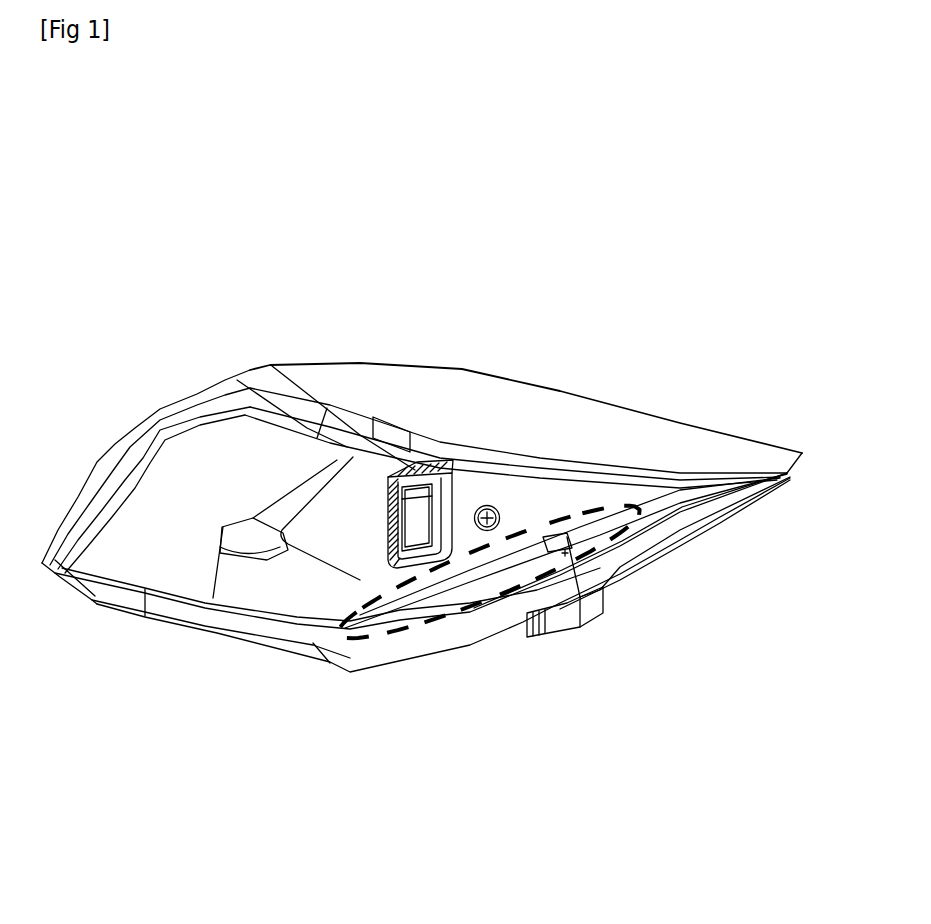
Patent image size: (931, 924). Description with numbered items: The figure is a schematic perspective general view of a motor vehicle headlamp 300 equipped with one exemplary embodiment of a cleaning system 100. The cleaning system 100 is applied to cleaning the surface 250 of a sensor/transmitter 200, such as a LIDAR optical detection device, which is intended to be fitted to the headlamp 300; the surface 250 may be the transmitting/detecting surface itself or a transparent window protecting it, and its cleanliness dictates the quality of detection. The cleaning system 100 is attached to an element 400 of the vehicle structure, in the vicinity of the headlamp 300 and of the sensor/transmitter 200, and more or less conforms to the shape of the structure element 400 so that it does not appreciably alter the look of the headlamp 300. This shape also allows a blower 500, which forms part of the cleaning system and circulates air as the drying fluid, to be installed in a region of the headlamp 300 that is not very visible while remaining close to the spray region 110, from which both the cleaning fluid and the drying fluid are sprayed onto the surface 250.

The cleaning system 100 is at (530, 552).
The spray region 110 is at (392, 633).
The sensor/transmitter 200 is at (442, 492).
The surface 250 is at (415, 522).
The motor vehicle headlamp 300 is at (222, 443).
The element of the vehicle structure 400 is at (652, 535).
The blower 500 is at (537, 637).